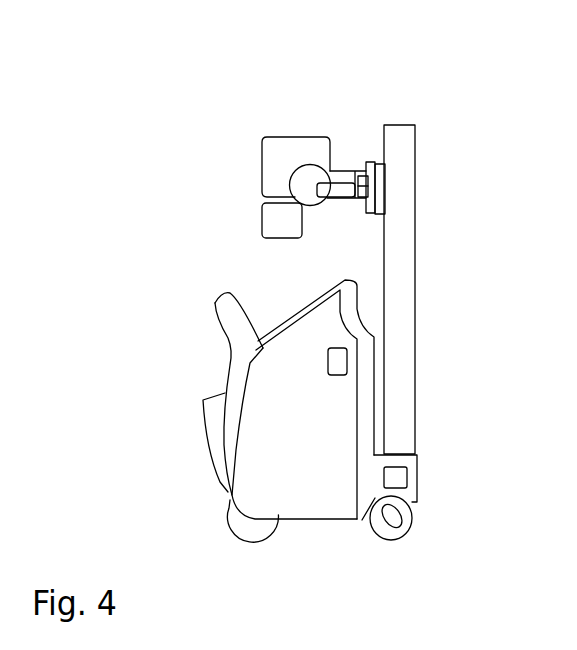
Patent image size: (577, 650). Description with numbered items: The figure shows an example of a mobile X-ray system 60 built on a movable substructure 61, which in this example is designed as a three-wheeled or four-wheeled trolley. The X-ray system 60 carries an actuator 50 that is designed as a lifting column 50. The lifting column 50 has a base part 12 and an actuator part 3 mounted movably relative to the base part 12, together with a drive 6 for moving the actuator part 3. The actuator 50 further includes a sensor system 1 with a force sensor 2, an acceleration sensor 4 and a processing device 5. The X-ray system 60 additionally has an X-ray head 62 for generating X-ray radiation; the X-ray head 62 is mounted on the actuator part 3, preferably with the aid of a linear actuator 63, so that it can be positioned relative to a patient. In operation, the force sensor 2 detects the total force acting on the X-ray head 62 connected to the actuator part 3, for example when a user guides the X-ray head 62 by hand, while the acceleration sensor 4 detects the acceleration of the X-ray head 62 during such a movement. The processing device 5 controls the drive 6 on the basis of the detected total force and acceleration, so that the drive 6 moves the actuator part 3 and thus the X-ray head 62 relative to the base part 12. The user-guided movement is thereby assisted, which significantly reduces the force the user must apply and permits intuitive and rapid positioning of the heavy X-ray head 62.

The sensor system 1 is at (355, 141).
The force sensor 2 is at (359, 163).
The actuator part 3 is at (386, 182).
The acceleration sensor 4 is at (363, 212).
The processing device 5 is at (337, 375).
The drive 6 is at (418, 483).
The base part 12 is at (416, 257).
The actuator 50 is at (468, 110).
The mobile X-ray system 60 is at (140, 57).
The movable substructure 61 is at (318, 519).
The X-ray head 62 is at (283, 136).
The linear actuator 63 is at (340, 171).